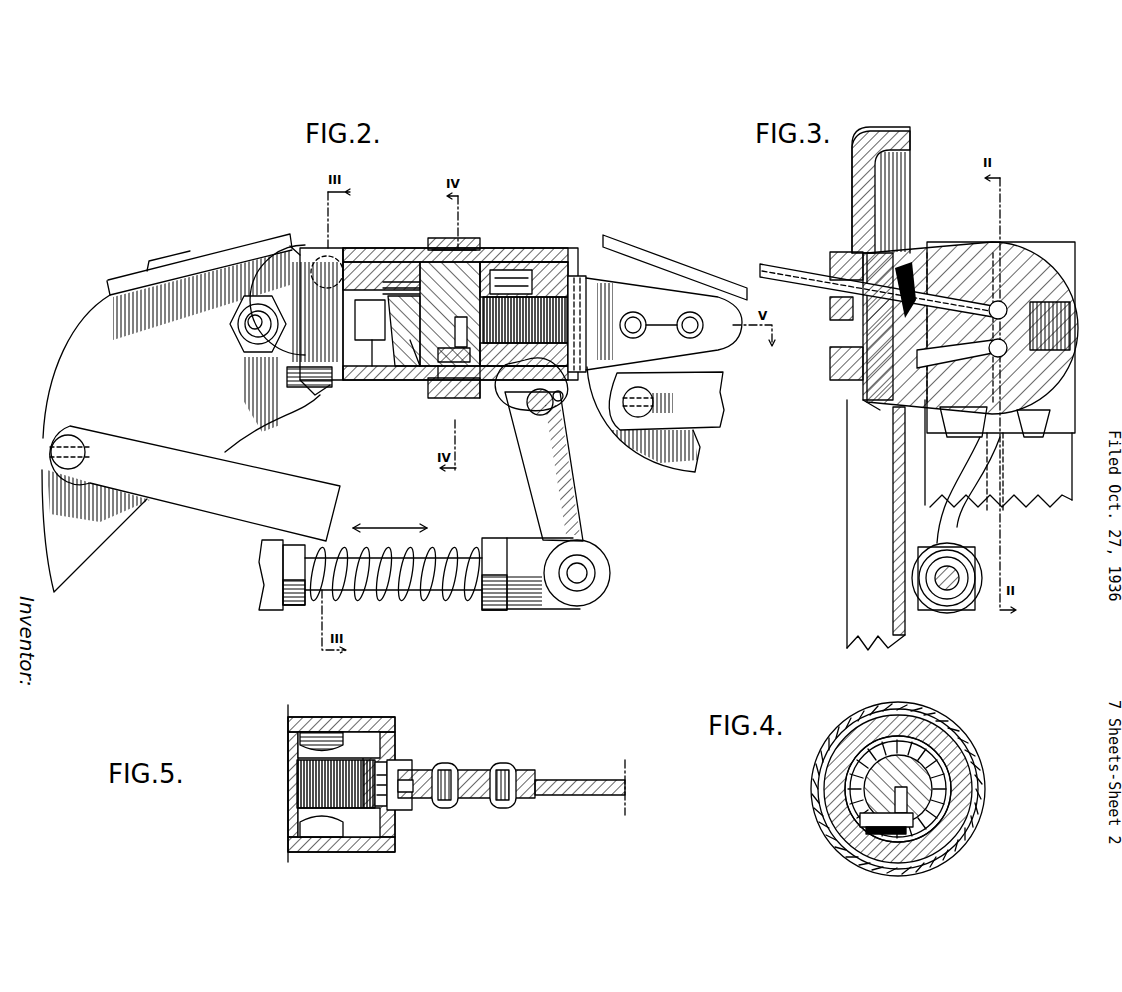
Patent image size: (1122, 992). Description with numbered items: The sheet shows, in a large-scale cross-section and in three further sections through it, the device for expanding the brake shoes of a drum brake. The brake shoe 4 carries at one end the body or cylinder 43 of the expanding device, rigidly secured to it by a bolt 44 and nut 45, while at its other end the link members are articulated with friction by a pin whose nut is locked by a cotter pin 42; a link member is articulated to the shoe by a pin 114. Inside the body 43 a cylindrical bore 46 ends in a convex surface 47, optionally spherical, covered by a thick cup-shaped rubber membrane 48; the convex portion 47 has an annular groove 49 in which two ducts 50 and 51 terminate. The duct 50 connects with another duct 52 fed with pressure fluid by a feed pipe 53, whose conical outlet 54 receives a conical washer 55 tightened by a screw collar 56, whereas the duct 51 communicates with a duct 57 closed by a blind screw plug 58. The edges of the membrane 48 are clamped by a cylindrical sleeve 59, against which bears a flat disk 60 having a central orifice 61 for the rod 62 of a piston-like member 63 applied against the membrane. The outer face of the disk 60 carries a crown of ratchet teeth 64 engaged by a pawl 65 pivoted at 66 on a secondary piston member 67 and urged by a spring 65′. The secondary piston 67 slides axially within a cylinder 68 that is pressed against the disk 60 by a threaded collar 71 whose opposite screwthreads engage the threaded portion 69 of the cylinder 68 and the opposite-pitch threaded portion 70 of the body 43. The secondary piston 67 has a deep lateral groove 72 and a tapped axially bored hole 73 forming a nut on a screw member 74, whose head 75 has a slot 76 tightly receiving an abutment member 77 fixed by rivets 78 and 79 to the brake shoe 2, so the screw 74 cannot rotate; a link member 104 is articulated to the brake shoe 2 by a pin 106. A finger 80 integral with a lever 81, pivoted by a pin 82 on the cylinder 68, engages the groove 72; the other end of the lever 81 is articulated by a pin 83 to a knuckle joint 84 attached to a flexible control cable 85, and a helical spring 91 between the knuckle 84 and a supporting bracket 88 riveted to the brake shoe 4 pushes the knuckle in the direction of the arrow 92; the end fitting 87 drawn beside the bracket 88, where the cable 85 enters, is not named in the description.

In FIG. 2, the brake shoe 2 is at (680, 453).
In FIG. 5, the brake shoe 2 is at (548, 780).
In FIG. 2, the brake shoe 4 is at (215, 440).
In FIG. 2, the cotter pin 42 is at (152, 460).
In FIG. 2, the body or cylinder 43 is at (312, 245).
In FIG. 3, the body or cylinder 43 is at (1027, 383).
In FIG. 2, the bolt 44 is at (257, 326).
In FIG. 2, the nut 45 is at (260, 346).
In FIG. 2, the cylindrical bore 46 is at (370, 383).
In FIG. 2, the convex surface 47 is at (282, 272).
In FIG. 2, the cup-shaped rubber membrane 48 is at (358, 248).
In FIG. 2, the annular groove 49 is at (383, 248).
In FIG. 2, the duct 50 is at (290, 246).
In FIG. 3, the duct 50 is at (1010, 312).
In FIG. 2, the duct 51 is at (313, 396).
In FIG. 3, the duct 51 is at (1008, 348).
In FIG. 3, the duct 52 is at (933, 285).
In FIG. 3, the feed pipe 53 is at (790, 272).
In FIG. 3, the conical outlet 54 is at (853, 317).
In FIG. 3, the conical washer 55 is at (910, 270).
In FIG. 3, the screw collar 56 is at (830, 307).
In FIG. 3, the duct 57 is at (867, 400).
In FIG. 3, the blind screw plug 58 is at (837, 373).
In FIG. 2, the cylindrical sleeve 59 is at (387, 380).
In FIG. 2, the flat disk 60 is at (440, 247).
In FIG. 2, the orifice 61 is at (412, 380).
In FIG. 2, the rod 62 is at (487, 250).
In FIG. 2, the piston-like member 63 is at (408, 248).
In FIG. 2, the ratchet teeth 64 is at (463, 395).
In FIG. 4, the ratchet teeth 64 is at (953, 832).
In FIG. 2, the pawl 65 is at (438, 410).
In FIG. 4, the pawl 65 is at (863, 817).
In FIG. 2, the spring 65′ is at (480, 258).
In FIG. 4, the spring 65′ is at (878, 830).
In FIG. 2, the pivot 66 is at (507, 253).
In FIG. 4, the pivot 66 is at (843, 790).
In FIG. 2, the secondary piston member 67 is at (582, 274).
In FIG. 4, the secondary piston member 67 is at (917, 785).
In FIG. 2, the cylinder 68 is at (595, 283).
In FIG. 4, the cylinder 68 is at (947, 752).
In FIG. 5, the cylinder 68 is at (388, 725).
In FIG. 2, the threaded portion 69 is at (480, 412).
In FIG. 2, the threaded portion 70 is at (440, 412).
In FIG. 2, the threaded collar 71 is at (463, 247).
In FIG. 4, the threaded collar 71 is at (920, 708).
In FIG. 2, the lateral groove 72 is at (573, 392).
In FIG. 2, the axially bored hole 73 is at (553, 262).
In FIG. 4, the axially bored hole 73 is at (948, 777).
In FIG. 5, the axially bored hole 73 is at (313, 758).
In FIG. 2, the screw member 74 is at (712, 347).
In FIG. 5, the screw member 74 is at (318, 795).
In FIG. 2, the head 75 is at (633, 309).
In FIG. 5, the head 75 is at (392, 797).
In FIG. 5, the slot 76 is at (415, 808).
In FIG. 2, the abutment member 77 is at (713, 324).
In FIG. 5, the abutment member 77 is at (460, 768).
In FIG. 2, the rivet 78 is at (693, 312).
In FIG. 5, the rivet 78 is at (440, 766).
In FIG. 2, the rivet 79 is at (715, 315).
In FIG. 5, the rivet 79 is at (502, 766).
In FIG. 2, the finger 80 is at (566, 407).
In FIG. 2, the lever 81 is at (562, 483).
In FIG. 2, the pin 82 is at (556, 410).
In FIG. 2, the pin 83 is at (577, 573).
In FIG. 2, the knuckle joint 84 is at (497, 603).
In FIG. 3, the knuckle joint 84 is at (935, 592).
In FIG. 2, the flexible control cable 85 is at (415, 567).
In FIG. 3, the flexible control cable 85 is at (943, 588).
In FIG. 2, the collar 87 is at (273, 603).
In FIG. 2, the supporting bracket 88 is at (265, 600).
In FIG. 2, the helical spring 91 is at (380, 596).
In FIG. 3, the helical spring 91 is at (950, 588).
In FIG. 2, the arrow 92 is at (373, 528).
In FIG. 2, the link member 104 is at (698, 402).
In FIG. 2, the pin 106 is at (645, 413).
In FIG. 2, the pin 114 is at (72, 463).